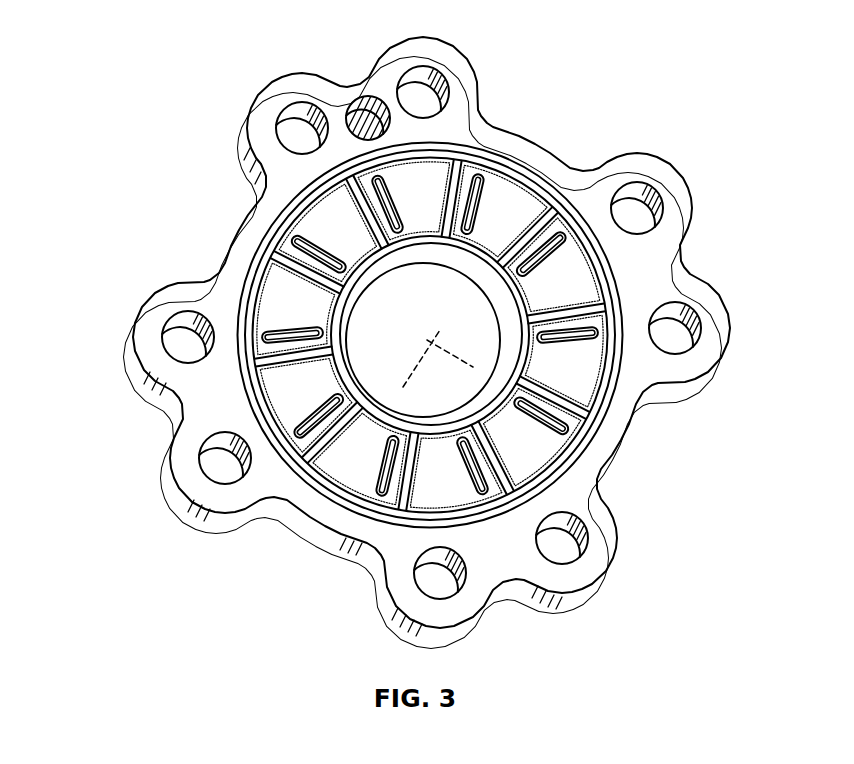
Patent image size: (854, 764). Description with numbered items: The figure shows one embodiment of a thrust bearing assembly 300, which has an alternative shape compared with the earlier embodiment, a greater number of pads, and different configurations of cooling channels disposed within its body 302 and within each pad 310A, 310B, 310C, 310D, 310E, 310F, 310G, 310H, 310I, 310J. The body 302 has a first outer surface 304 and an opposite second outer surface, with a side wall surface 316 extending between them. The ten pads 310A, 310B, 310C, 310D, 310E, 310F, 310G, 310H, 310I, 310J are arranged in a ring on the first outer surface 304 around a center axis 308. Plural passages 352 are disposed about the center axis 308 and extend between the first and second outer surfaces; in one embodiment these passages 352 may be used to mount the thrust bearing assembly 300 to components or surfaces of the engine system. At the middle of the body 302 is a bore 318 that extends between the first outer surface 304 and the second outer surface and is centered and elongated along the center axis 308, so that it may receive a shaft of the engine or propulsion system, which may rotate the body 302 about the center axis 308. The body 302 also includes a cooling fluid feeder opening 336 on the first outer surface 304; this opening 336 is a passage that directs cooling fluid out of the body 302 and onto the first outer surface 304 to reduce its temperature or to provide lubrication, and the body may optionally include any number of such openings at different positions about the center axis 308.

The thrust bearing assembly 300 is at (616, 82).
The body 302 is at (263, 112).
The first outer surface 304 is at (470, 103).
The center axis 308 is at (431, 341).
The pad 310A is at (588, 369).
The pad 310B is at (576, 268).
The pad 310C is at (516, 203).
The pad 310D is at (395, 178).
The pad 310E is at (331, 222).
The pad 310F is at (282, 290).
The pad 310G is at (297, 386).
The pad 310H is at (340, 462).
The pad 310I is at (462, 490).
The pad 310J is at (550, 446).
The side wall surface 316 is at (126, 357).
The bore 318 is at (243, 497).
The cooling fluid feeder opening 336 is at (358, 118).
The passages 352 is at (640, 216).